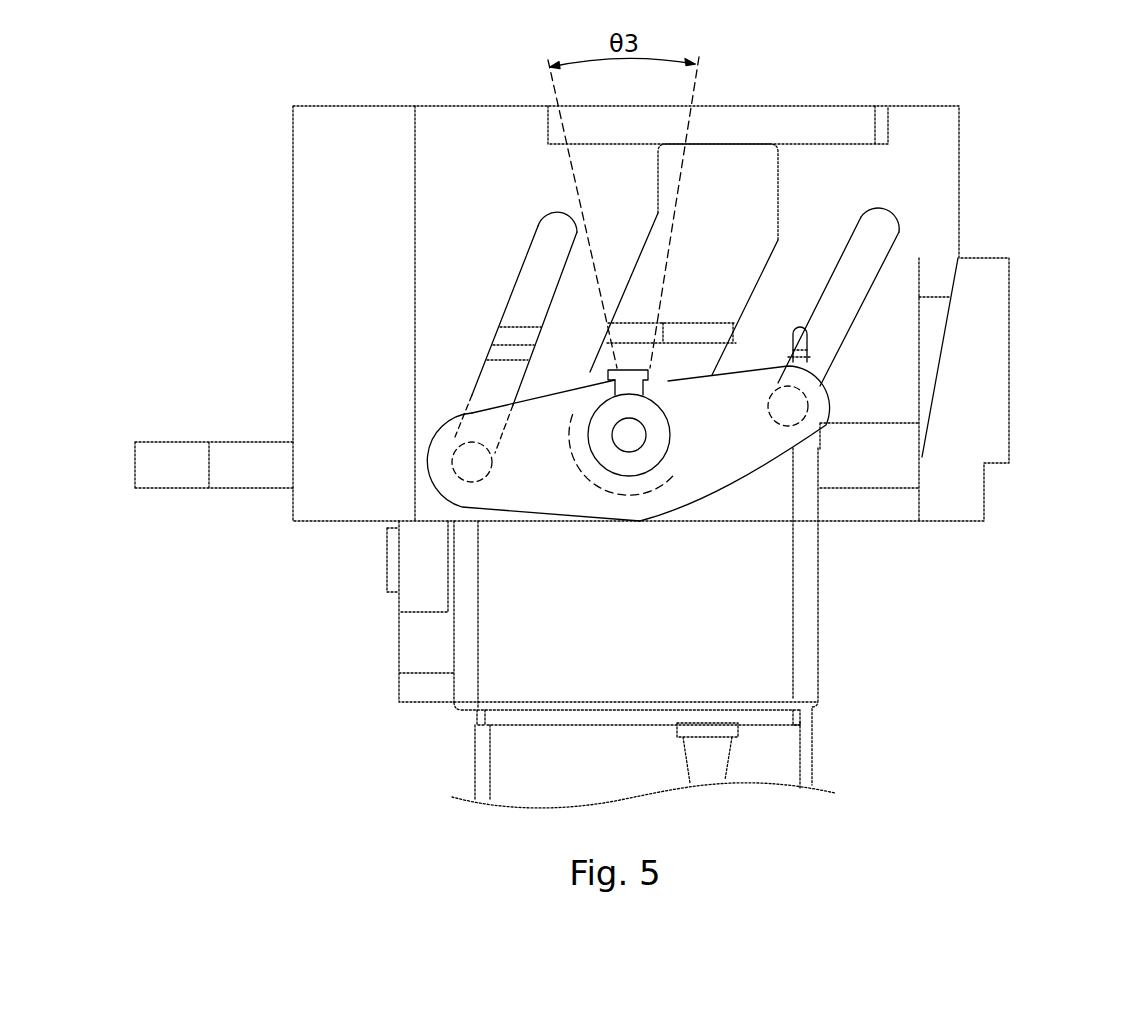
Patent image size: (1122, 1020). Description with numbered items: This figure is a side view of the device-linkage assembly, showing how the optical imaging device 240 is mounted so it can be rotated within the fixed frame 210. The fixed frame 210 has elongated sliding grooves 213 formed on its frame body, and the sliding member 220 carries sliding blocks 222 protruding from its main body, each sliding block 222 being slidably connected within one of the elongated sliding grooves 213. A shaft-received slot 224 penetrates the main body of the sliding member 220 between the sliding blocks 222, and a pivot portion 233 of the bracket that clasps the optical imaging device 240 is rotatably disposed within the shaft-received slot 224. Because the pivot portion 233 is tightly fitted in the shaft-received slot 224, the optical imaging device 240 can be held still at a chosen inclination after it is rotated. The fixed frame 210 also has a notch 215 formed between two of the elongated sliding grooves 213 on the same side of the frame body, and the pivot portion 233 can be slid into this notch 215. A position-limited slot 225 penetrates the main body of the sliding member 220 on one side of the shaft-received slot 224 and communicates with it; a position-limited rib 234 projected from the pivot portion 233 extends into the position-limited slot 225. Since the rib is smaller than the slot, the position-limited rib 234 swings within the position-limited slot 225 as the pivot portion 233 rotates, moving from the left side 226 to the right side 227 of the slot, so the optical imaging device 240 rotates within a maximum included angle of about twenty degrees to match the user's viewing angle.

The fixed frame 210 is at (935, 141).
The elongated sliding grooves 213 is at (908, 206).
The notches 215 is at (745, 135).
The sliding member 220 is at (523, 498).
The sliding blocks 222 is at (472, 462).
The shaft-received slot 224 is at (657, 478).
The position-limited slot 225 is at (623, 355).
The left side 226 is at (615, 378).
The right side 227 is at (633, 343).
The pivot portion 233 is at (633, 465).
The position-limited rib 234 is at (618, 360).
The optical imaging device 240 is at (503, 640).